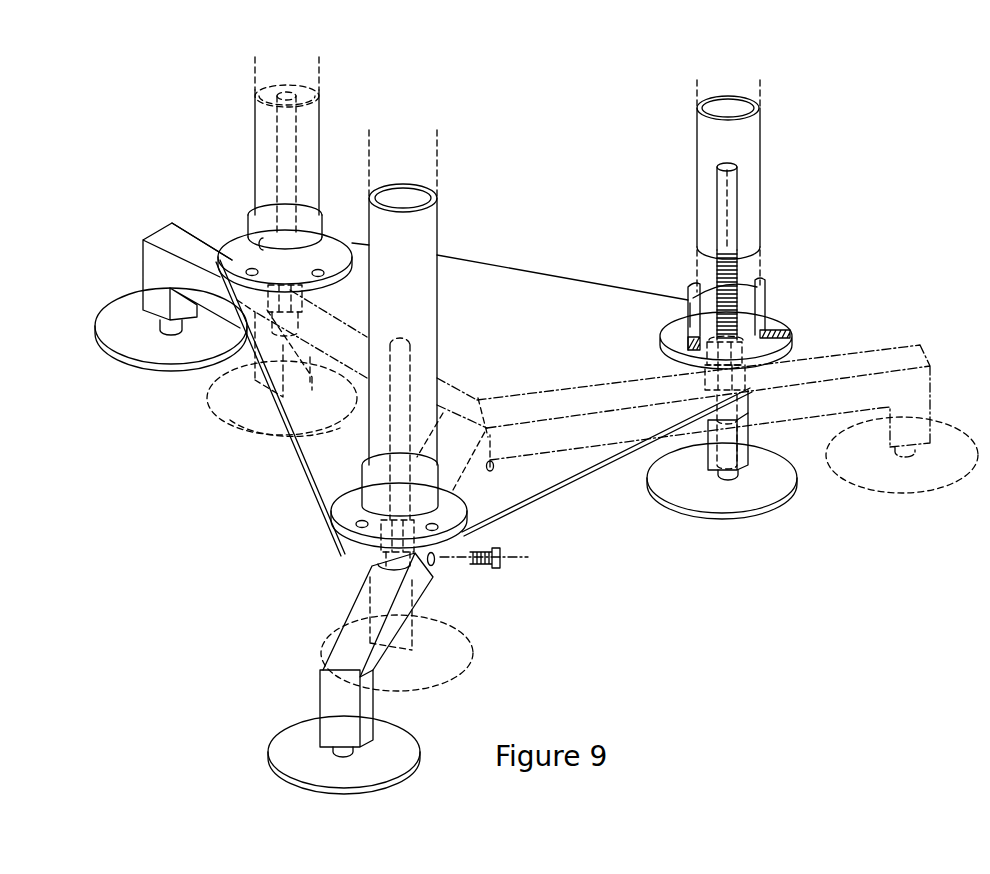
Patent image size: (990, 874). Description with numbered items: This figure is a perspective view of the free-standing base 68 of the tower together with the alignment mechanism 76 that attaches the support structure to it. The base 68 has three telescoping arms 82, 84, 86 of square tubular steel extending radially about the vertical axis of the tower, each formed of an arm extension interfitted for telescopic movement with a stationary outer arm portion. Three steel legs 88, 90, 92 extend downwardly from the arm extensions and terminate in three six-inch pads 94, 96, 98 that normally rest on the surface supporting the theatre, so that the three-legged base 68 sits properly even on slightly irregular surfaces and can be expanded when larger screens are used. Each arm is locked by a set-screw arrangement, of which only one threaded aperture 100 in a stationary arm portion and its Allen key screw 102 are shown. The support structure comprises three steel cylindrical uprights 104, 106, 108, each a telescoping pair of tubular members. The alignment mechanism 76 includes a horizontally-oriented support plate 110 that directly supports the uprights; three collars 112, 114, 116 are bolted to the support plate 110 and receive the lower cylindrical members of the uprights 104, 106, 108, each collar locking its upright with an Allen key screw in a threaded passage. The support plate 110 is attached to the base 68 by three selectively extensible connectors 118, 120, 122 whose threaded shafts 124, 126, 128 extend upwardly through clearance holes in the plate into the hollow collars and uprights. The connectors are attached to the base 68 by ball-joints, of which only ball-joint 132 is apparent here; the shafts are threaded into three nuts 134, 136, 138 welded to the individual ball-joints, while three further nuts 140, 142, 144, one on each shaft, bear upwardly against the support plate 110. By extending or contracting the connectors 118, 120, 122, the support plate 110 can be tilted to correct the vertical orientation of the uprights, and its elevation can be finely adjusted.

The base 68 is at (120, 208).
The alignment mechanism 76 is at (593, 240).
The telescoping arm 82 is at (205, 238).
The telescoping arm 84 is at (428, 580).
The telescoping arm 86 is at (652, 440).
The leg 88 is at (142, 255).
The leg 90 is at (369, 679).
The leg 92 is at (712, 415).
The pad 94 is at (133, 323).
The pad 96 is at (392, 753).
The pad 98 is at (735, 498).
The threaded aperture 100 is at (438, 563).
The Allen key screw 102 is at (504, 566).
The cylindrical upright 104 is at (310, 133).
The cylindrical upright 106 is at (437, 222).
The cylindrical upright 108 is at (758, 189).
The support plate 110 is at (594, 322).
The collar 112 is at (250, 222).
The collar 114 is at (373, 500).
The collar 116 is at (757, 282).
The extensible connector 118 is at (264, 166).
The extensible connector 120 is at (494, 470).
The extensible connector 122 is at (739, 280).
The threaded shaft 124 is at (279, 104).
The threaded shaft 126 is at (452, 494).
The threaded shaft 128 is at (735, 301).
The ball-joint 132 is at (736, 394).
The nut 134 is at (290, 308).
The nut 136 is at (372, 567).
The nut 138 is at (728, 378).
The nut 140 is at (270, 298).
The nut 142 is at (383, 533).
The nut 144 is at (745, 345).